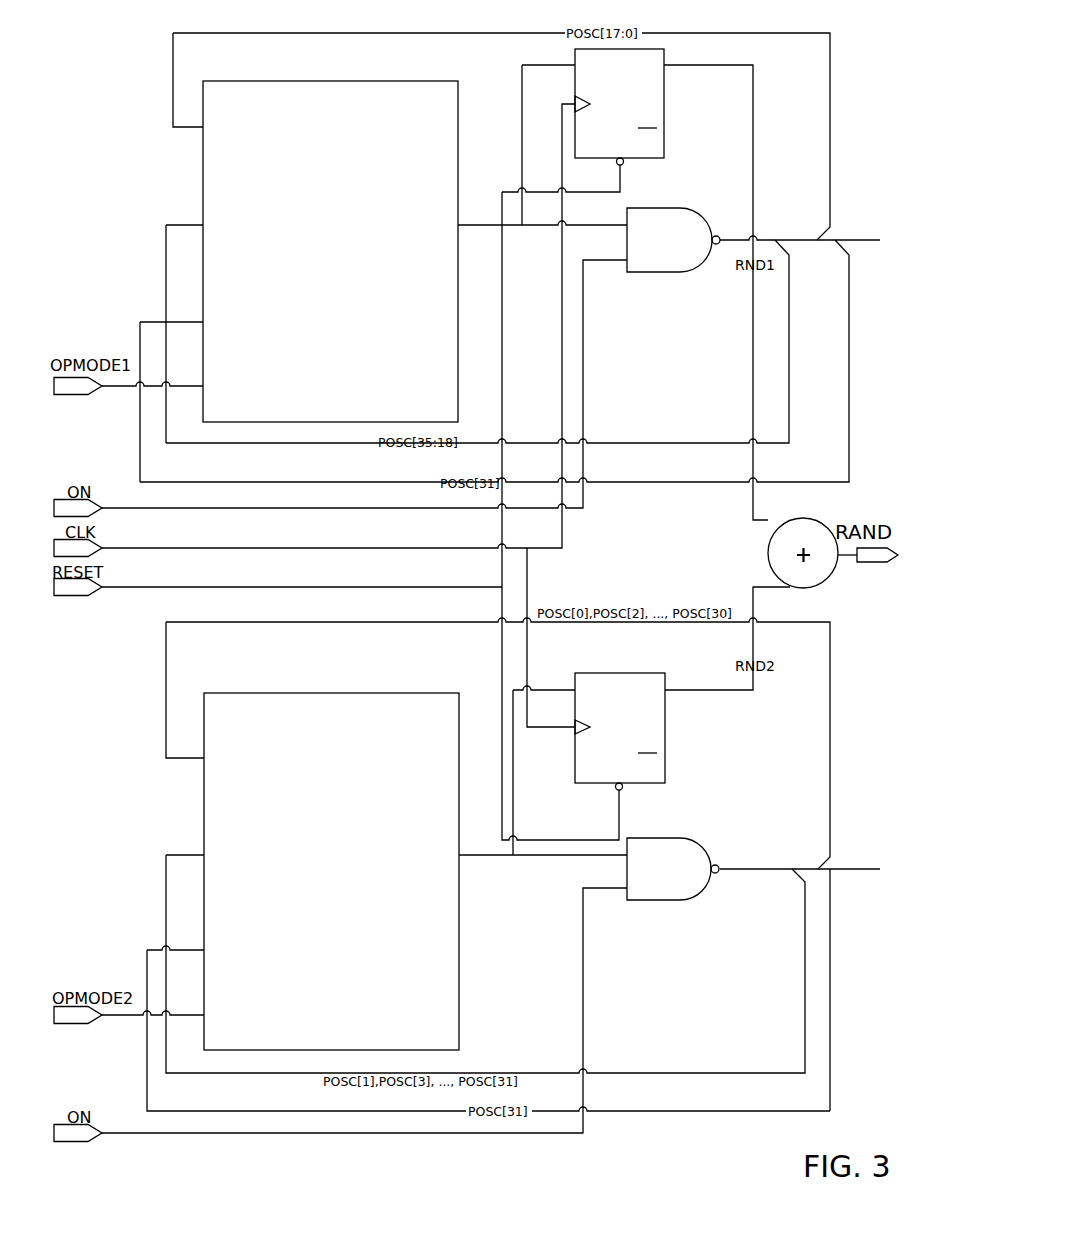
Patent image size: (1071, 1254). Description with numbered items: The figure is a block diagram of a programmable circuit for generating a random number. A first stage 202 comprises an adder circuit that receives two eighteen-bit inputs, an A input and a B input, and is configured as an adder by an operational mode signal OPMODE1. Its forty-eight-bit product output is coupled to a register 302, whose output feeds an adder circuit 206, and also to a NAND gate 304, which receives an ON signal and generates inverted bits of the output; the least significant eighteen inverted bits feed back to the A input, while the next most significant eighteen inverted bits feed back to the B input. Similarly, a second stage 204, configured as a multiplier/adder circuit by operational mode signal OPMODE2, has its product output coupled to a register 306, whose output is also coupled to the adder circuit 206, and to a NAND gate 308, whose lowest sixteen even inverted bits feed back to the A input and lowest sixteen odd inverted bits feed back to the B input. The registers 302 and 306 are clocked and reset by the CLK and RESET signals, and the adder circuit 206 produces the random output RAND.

The first stage 202 is at (458, 107).
The second stage 204 is at (380, 694).
The adder circuit 206 is at (822, 522).
The register 302 is at (665, 120).
The NAND gate 304 is at (674, 208).
The register 306 is at (628, 673).
The NAND gate 308 is at (685, 838).